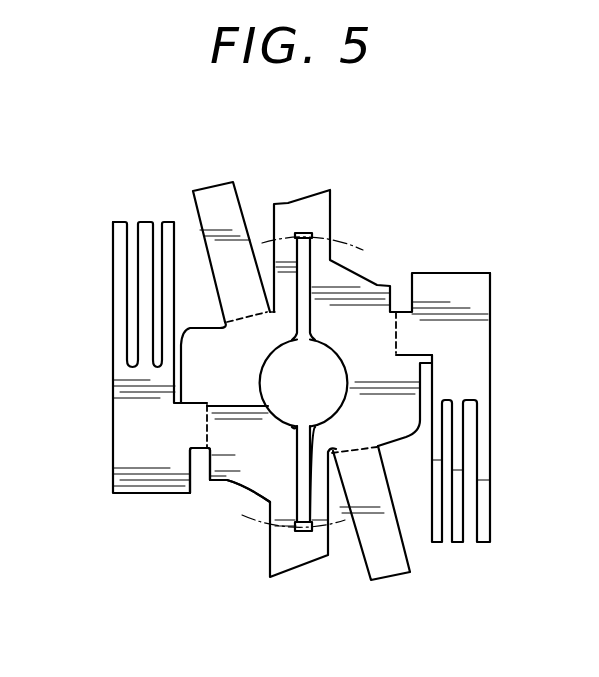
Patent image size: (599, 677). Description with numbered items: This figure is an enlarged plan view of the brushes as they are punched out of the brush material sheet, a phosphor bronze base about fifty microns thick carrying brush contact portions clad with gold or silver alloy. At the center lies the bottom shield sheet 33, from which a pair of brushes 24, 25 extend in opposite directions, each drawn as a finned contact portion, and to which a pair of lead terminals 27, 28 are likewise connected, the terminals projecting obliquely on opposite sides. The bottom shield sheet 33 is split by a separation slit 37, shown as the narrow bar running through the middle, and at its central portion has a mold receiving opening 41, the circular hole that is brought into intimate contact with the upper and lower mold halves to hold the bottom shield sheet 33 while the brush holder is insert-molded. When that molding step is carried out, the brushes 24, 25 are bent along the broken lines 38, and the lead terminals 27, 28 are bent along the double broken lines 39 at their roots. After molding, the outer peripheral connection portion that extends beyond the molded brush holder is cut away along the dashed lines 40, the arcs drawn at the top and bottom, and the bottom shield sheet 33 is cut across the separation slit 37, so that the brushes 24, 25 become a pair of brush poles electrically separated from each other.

The brush 24 is at (121, 278).
The brush 25 is at (482, 496).
The lead terminal 27 is at (219, 207).
The lead terminal 28 is at (390, 552).
The bottom shield sheet 33 is at (250, 470).
The separation slit 37 is at (311, 307).
The broken lines 38 is at (208, 424).
The double broken lines 39 is at (242, 322).
The dashed lines 40 is at (349, 240).
The mold receiving opening 41 is at (341, 358).